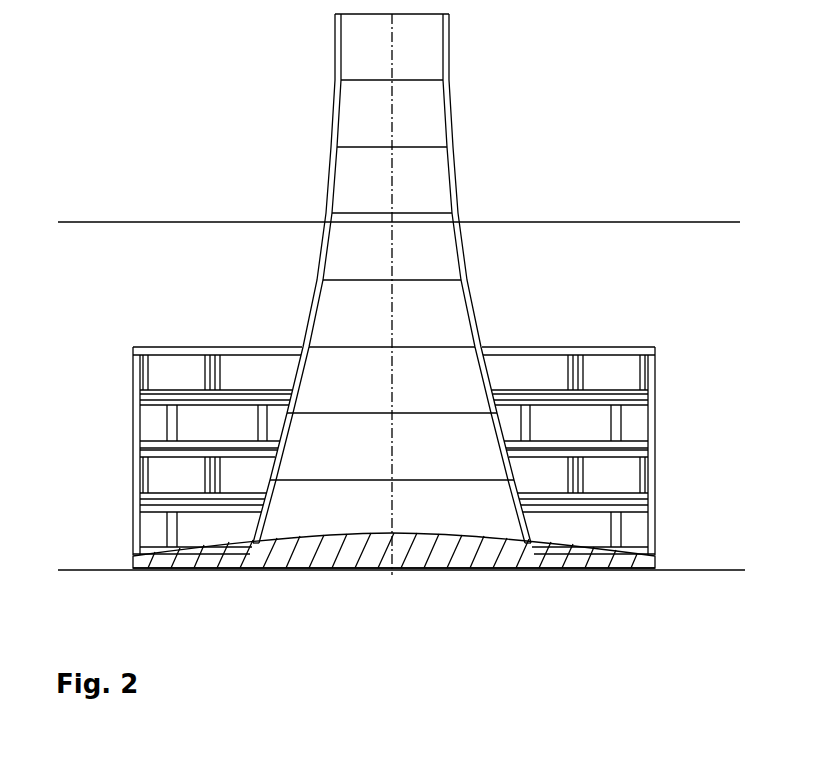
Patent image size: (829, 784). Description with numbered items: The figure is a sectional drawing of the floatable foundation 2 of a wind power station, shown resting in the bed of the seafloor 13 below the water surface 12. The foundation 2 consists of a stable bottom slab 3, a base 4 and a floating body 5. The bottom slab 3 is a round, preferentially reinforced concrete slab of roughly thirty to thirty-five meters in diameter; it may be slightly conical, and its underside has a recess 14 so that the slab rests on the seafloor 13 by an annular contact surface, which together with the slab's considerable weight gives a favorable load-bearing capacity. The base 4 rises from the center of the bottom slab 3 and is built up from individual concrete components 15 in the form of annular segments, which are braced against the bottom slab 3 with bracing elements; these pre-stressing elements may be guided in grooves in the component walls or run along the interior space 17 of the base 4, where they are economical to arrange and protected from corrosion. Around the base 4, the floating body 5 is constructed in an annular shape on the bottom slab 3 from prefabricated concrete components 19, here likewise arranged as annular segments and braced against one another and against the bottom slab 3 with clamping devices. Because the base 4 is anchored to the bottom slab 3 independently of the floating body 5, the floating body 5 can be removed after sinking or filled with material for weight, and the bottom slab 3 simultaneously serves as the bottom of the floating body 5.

The floatable foundation 2 is at (350, 405).
The bottom slab 3 is at (637, 570).
The base 4 is at (483, 330).
The floating body 5 is at (155, 368).
The water surface 12 is at (399, 145).
The seafloor 13 is at (401, 505).
The recess 14 is at (502, 570).
The concrete components 15 is at (342, 327).
The interior space 17 is at (424, 297).
The concrete components 19 is at (177, 482).